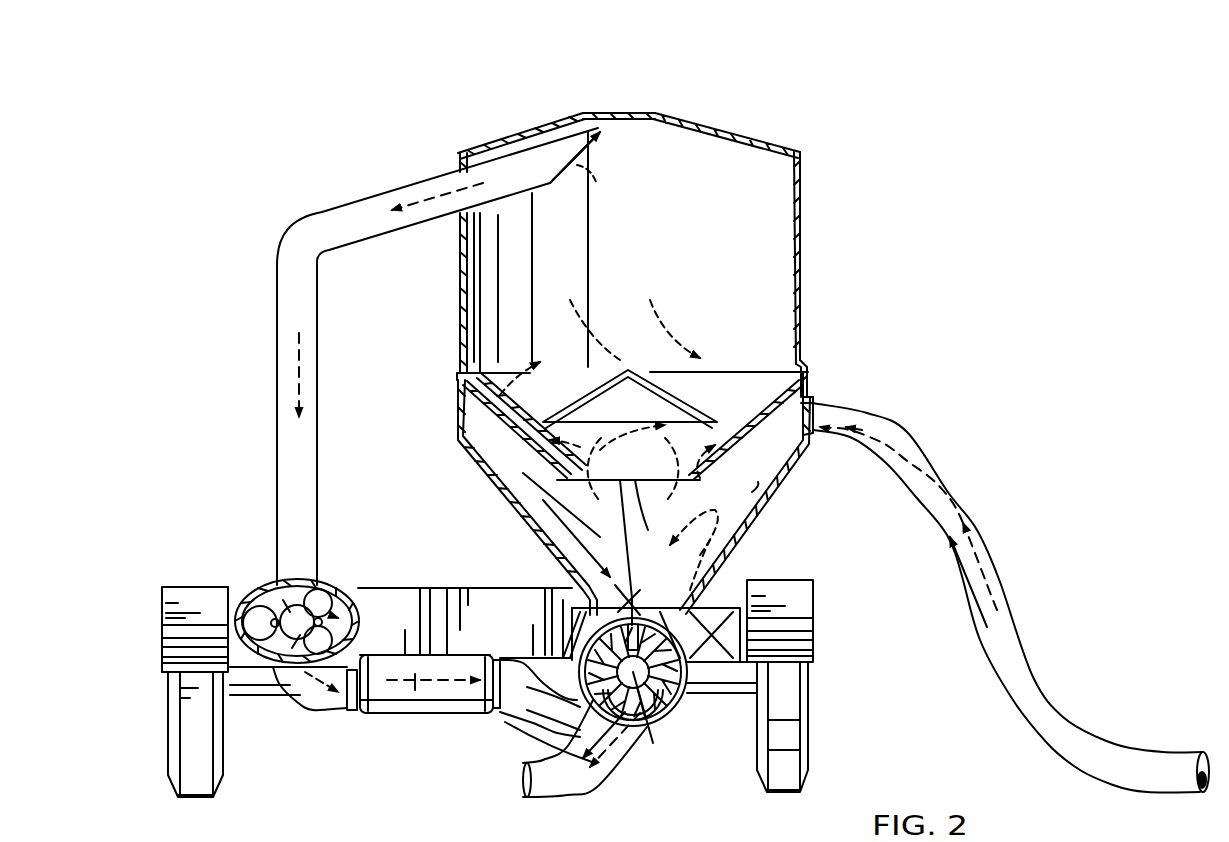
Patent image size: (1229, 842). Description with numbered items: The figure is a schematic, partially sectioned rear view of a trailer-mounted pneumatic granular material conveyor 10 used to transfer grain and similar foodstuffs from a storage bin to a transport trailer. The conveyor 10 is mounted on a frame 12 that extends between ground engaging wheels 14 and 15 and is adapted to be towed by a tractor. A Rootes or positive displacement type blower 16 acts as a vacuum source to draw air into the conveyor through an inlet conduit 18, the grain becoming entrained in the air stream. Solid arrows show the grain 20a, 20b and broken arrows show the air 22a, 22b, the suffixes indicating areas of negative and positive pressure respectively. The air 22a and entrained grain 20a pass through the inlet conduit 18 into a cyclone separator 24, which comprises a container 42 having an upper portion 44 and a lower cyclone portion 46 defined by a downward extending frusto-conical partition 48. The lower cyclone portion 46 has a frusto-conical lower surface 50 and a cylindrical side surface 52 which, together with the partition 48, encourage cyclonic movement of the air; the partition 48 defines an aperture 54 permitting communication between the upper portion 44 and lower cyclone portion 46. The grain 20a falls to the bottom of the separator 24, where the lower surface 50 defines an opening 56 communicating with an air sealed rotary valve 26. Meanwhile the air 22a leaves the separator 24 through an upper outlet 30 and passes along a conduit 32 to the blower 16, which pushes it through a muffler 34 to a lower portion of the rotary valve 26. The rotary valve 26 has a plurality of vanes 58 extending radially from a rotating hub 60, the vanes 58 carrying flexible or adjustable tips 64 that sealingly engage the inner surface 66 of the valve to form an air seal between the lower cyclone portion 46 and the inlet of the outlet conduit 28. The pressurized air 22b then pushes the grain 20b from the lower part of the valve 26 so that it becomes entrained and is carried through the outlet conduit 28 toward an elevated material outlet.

The granular material conveyor 10 is at (903, 198).
The frame 12 is at (250, 690).
The ground engaging wheel 14 is at (810, 742).
The ground engaging wheel 15 is at (223, 788).
The blower 16 is at (265, 592).
The inlet conduit 18 is at (1087, 728).
The grain 20a is at (545, 530).
The grain 20b is at (582, 747).
The air flow 22a is at (299, 380).
The air flow 22b is at (415, 690).
The cyclone separator 24 is at (828, 287).
The rotary valve 26 is at (535, 706).
The outlet conduit 28 is at (545, 790).
The upper outlet 30 is at (606, 136).
The conduit 32 is at (322, 222).
The muffler 34 is at (378, 720).
The container 42 is at (800, 182).
The upper portion 44 is at (807, 338).
The lower cyclone portion 46 is at (520, 523).
The partition 48 is at (815, 400).
The lower surface 50 is at (762, 498).
The cylindrical side surface 52 is at (468, 430).
The aperture 54 is at (640, 500).
The opening 56 is at (630, 600).
The vanes 58 is at (678, 706).
The hub 60 is at (640, 712).
The tips 64 is at (533, 658).
The inner surface 66 is at (705, 618).